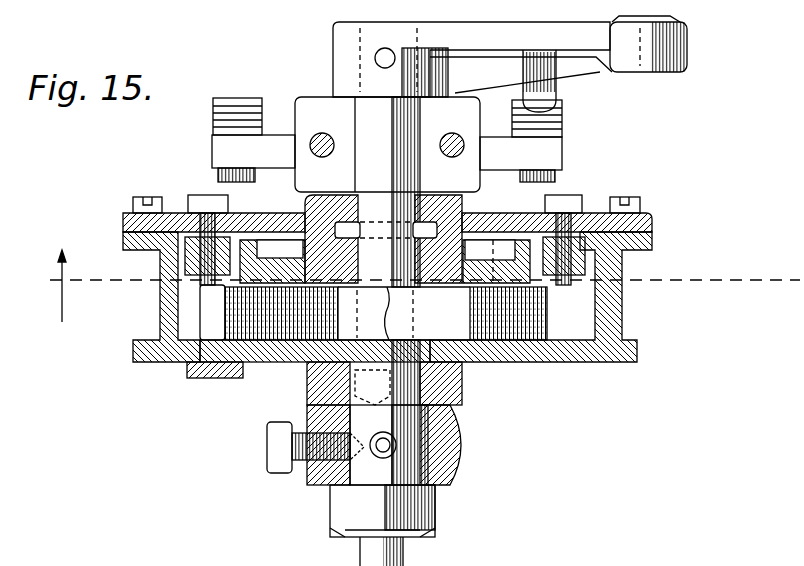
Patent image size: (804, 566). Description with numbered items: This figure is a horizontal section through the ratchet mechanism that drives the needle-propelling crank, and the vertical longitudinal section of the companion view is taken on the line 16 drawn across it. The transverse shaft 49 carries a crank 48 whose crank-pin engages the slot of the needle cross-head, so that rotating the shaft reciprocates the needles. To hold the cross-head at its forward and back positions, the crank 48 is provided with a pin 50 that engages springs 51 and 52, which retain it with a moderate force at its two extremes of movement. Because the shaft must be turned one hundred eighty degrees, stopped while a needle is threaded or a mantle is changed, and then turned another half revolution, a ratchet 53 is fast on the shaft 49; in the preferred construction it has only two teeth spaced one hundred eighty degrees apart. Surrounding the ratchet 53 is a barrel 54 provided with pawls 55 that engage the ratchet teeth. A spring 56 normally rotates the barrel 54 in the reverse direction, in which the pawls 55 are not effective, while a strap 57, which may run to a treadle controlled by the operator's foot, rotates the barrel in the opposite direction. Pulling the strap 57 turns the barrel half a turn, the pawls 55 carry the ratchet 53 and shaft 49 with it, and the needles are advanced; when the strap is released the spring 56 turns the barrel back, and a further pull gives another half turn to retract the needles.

The section line 16 is at (404, 286).
The crank 48 is at (688, 60).
The transverse shaft 49 is at (453, 107).
The pin 50 is at (545, 95).
The spring 51 is at (240, 105).
The spring 52 is at (556, 128).
The ratchet 53 is at (478, 267).
The barrel 54 is at (652, 247).
The pawls 55 is at (190, 255).
The spring 56 is at (465, 320).
The strap 57 is at (623, 320).